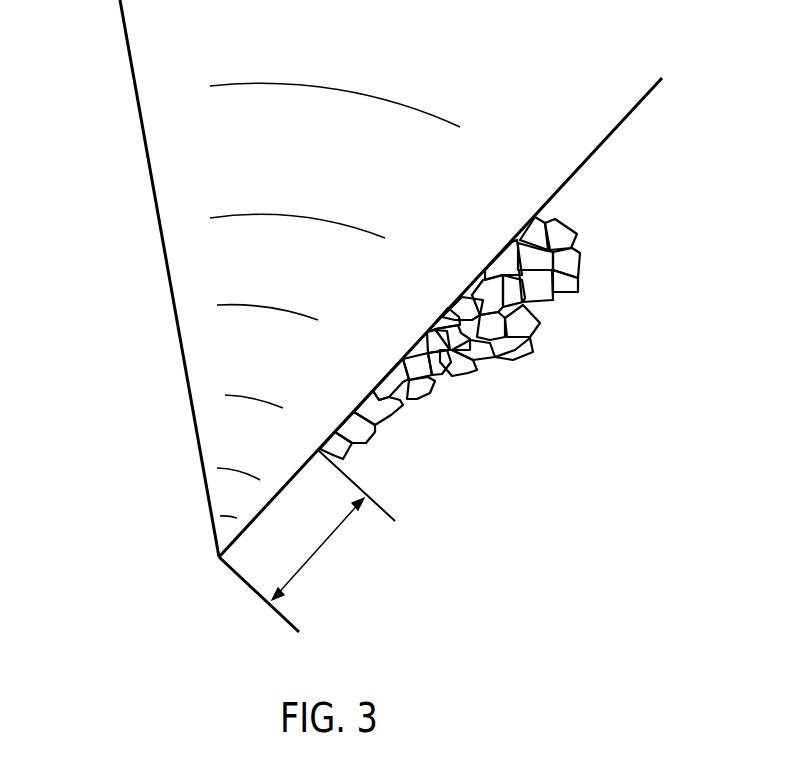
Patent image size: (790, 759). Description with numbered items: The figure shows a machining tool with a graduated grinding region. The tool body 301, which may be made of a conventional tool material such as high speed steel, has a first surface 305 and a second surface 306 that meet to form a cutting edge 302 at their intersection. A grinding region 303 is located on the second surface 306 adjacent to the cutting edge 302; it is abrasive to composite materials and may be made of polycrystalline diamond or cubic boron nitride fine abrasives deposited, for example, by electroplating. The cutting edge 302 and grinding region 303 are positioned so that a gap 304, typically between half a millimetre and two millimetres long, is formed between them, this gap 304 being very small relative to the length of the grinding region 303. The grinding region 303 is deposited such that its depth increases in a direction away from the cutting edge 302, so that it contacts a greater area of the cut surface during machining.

The tool body 301 is at (186, 75).
The cutting edge 302 is at (219, 557).
The grinding region 303 is at (473, 370).
The gap 304 is at (313, 553).
The first surface 305 is at (175, 312).
The second surface 306 is at (598, 150).